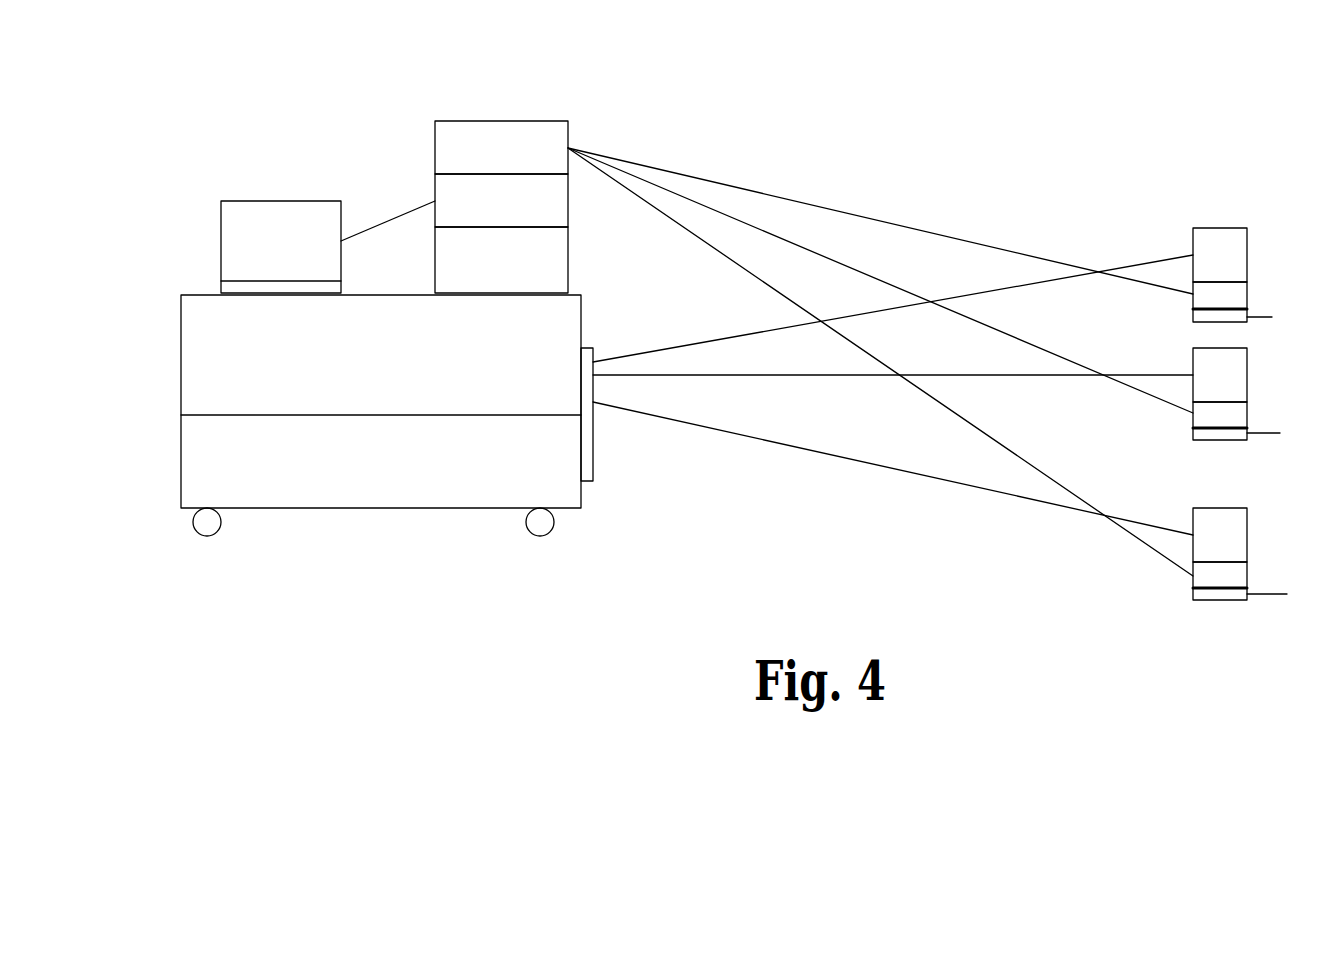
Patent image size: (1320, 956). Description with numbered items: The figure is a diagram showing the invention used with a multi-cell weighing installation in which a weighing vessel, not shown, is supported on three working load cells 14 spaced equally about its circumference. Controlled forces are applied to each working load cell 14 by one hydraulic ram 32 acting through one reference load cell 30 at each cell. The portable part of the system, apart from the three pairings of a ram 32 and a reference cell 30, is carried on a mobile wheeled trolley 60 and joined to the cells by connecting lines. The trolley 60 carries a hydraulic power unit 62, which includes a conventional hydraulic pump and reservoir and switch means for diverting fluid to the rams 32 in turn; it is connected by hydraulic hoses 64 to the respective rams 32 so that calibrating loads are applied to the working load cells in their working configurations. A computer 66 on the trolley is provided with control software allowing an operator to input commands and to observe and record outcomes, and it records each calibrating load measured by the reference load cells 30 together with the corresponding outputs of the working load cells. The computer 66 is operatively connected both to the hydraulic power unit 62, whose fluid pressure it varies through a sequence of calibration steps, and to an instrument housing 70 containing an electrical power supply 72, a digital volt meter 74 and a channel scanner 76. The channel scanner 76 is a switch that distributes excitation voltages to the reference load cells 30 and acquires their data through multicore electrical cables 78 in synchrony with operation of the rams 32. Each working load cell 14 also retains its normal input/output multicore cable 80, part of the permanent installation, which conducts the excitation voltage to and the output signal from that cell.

The working load cell 14 is at (1193, 313).
The reference load cell 30 is at (1235, 297).
The hydraulic ram 32 is at (1237, 250).
The mobile wheeled trolley 60 is at (355, 427).
The hydraulic power unit 62 is at (197, 345).
The hydraulic hoses 64 is at (760, 333).
The computer 66 is at (280, 213).
The instrument housing 70 is at (490, 167).
The electrical power supply 72 is at (550, 258).
The digital volt meter 74 is at (550, 209).
The channel scanner 76 is at (532, 137).
The multicore electrical cables 78 is at (758, 278).
The input/output multicore cable 80 is at (1266, 317).